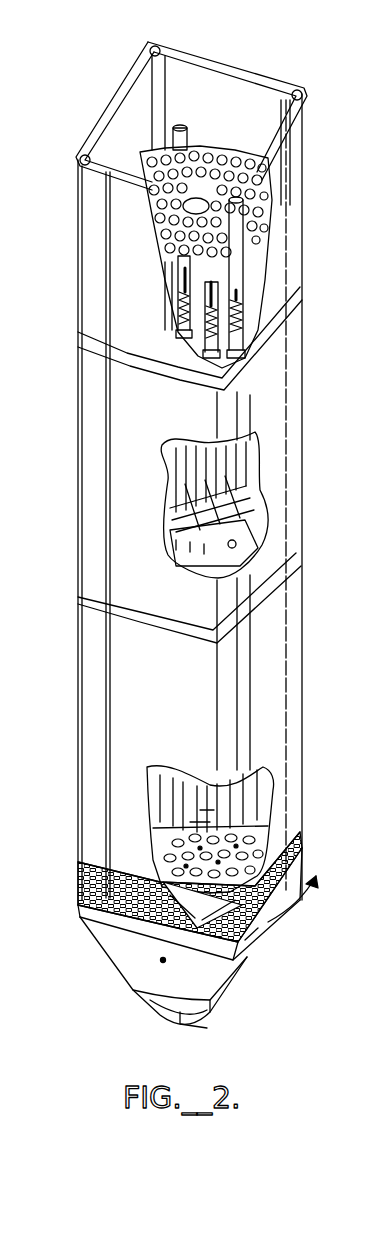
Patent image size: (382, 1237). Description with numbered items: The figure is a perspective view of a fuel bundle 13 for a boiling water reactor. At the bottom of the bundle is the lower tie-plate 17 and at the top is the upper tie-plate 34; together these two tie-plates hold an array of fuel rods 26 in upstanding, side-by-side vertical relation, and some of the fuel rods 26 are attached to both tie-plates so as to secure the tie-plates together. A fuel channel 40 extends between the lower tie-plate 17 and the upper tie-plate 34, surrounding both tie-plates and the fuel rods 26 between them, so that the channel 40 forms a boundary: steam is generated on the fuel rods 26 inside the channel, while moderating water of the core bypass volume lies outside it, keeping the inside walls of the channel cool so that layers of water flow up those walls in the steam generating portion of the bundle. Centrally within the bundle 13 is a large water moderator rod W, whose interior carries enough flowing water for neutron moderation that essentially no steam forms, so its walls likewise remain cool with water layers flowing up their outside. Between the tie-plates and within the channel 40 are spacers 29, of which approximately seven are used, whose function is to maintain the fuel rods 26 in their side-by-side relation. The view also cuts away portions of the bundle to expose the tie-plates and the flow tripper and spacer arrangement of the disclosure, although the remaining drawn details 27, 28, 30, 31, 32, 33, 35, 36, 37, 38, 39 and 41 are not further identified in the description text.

The fuel bundle 13 is at (72, 448).
The lower tie-plate 17 is at (187, 1023).
The fuel rods 26 is at (260, 462).
The lower end plate 27 is at (135, 915).
The hold-down spring 28 is at (190, 307).
The spacers 29 is at (263, 523).
The guide tube sleeve 30 is at (240, 337).
The lower tie plate 31 is at (260, 825).
The flow holes 32 is at (183, 827).
The bolt 33 is at (210, 304).
The upper tie-plate 34 is at (160, 233).
The guide rod 35 is at (253, 243).
The spacer band 36 is at (77, 642).
The top rim frame 37 is at (190, 66).
The corner pad 38 is at (165, 52).
The nozzle tip 39 is at (212, 1013).
The fuel channel 40 is at (76, 893).
The drain hole 41 is at (160, 961).
The water moderator rod W is at (258, 172).